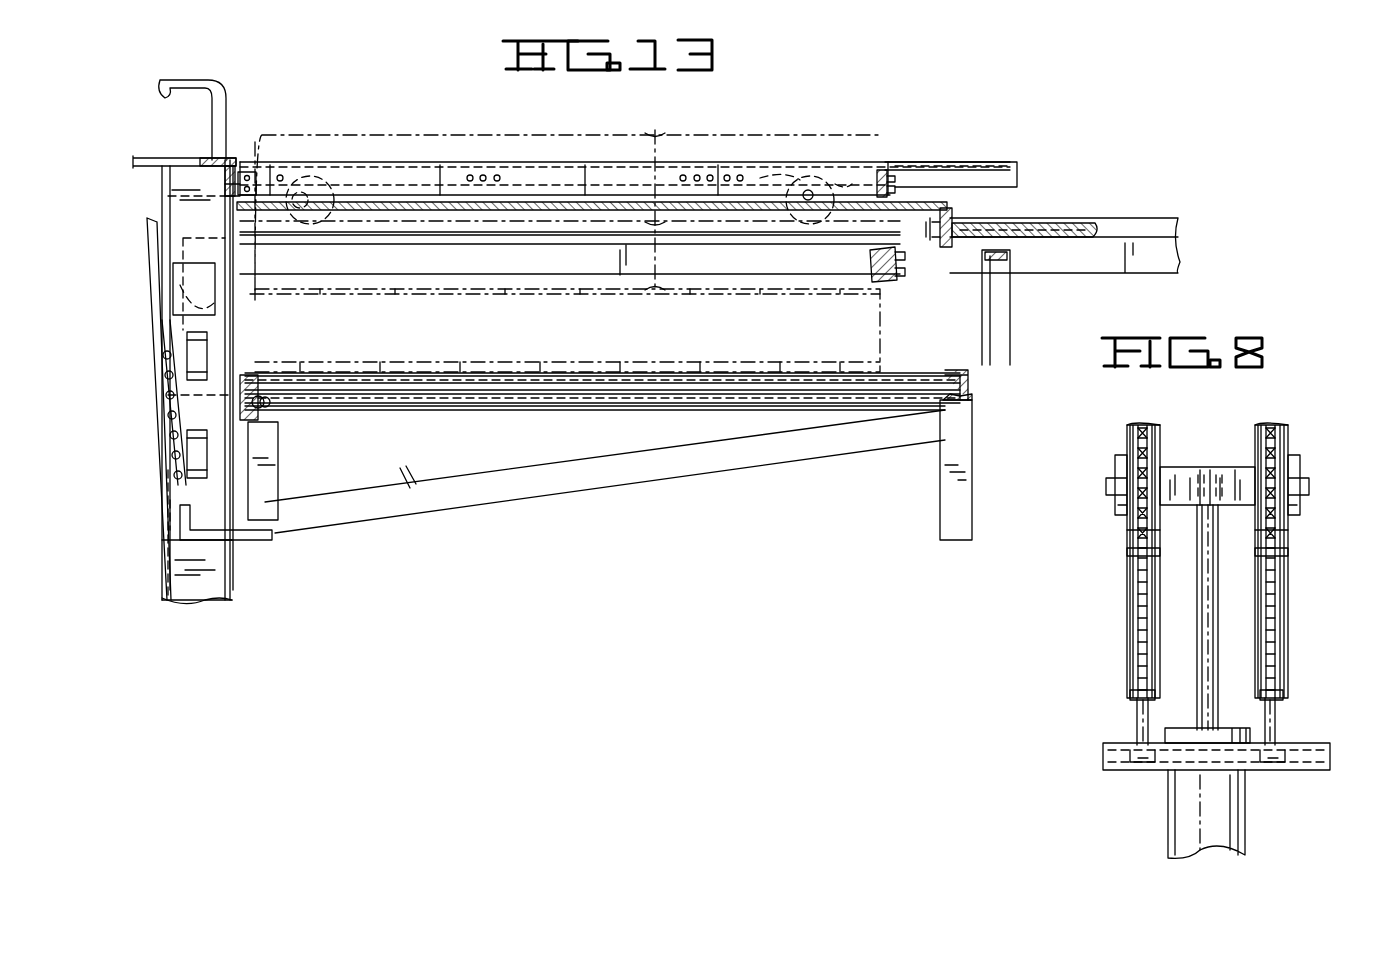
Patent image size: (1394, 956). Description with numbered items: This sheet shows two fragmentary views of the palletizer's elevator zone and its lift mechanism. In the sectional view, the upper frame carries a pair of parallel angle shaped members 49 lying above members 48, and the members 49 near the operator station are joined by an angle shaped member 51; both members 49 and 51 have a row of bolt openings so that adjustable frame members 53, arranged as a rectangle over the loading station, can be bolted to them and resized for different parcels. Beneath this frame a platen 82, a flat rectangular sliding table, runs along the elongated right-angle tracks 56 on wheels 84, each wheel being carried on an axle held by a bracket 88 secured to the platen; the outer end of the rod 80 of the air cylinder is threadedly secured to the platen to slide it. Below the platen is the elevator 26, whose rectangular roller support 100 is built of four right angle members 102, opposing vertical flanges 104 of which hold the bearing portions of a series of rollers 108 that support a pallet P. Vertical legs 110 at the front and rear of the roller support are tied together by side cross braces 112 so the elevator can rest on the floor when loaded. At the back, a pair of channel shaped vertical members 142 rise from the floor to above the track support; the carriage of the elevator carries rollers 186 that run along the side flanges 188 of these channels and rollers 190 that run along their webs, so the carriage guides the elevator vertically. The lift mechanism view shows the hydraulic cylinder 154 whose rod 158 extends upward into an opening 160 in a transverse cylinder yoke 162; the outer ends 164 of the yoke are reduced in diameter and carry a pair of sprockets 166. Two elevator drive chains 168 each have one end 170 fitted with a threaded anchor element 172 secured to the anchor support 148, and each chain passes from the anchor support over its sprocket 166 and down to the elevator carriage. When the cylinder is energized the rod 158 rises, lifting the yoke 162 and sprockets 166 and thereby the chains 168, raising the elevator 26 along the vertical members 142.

In FIG. 13, the elevator 26 is at (502, 518).
In FIG. 13, the member 48 is at (1075, 262).
In FIG. 13, the angle shaped member 49 is at (942, 162).
In FIG. 13, the angle shaped member 51 is at (236, 166).
In FIG. 13, the adjustable frame member 53 is at (412, 170).
In FIG. 13, the track 56 is at (1138, 218).
In FIG. 13, the rod 80 is at (1058, 226).
In FIG. 13, the platen 82 is at (955, 203).
In FIG. 13, the wheel 84 is at (820, 176).
In FIG. 13, the bracket 88 is at (770, 180).
In FIG. 13, the roller support 100 is at (640, 420).
In FIG. 13, the right angle member 102 is at (968, 414).
In FIG. 13, the vertical flange 104 is at (968, 395).
In FIG. 13, the roller 108 is at (472, 385).
In FIG. 13, the vertical leg 110 is at (270, 512).
In FIG. 13, the side cross brace 112 is at (720, 458).
In FIG. 13, the channel shaped vertical member 142 is at (213, 615).
In FIG. 8, the anchor support 148 is at (1125, 765).
In FIG. 8, the cylinder 154 is at (1237, 820).
In FIG. 8, the rod 158 is at (1205, 659).
In FIG. 8, the opening 160 is at (1200, 520).
In FIG. 8, the cylinder yoke 162 is at (1238, 468).
In FIG. 8, the reduced end portion 164 is at (1108, 493).
In FIG. 8, the sprocket 166 is at (1127, 447).
In FIG. 13, the elevator drive chain 168 is at (167, 438).
In FIG. 8, the elevator drive chain 168 is at (1130, 630).
In FIG. 8, the end 170 is at (1128, 697).
In FIG. 8, the threaded anchor element 172 is at (1135, 724).
In FIG. 13, the roller 186 is at (205, 314).
In FIG. 13, the side flange 188 is at (215, 587).
In FIG. 13, the roller 190 is at (197, 357).
In FIG. 13, the pallet P is at (882, 330).